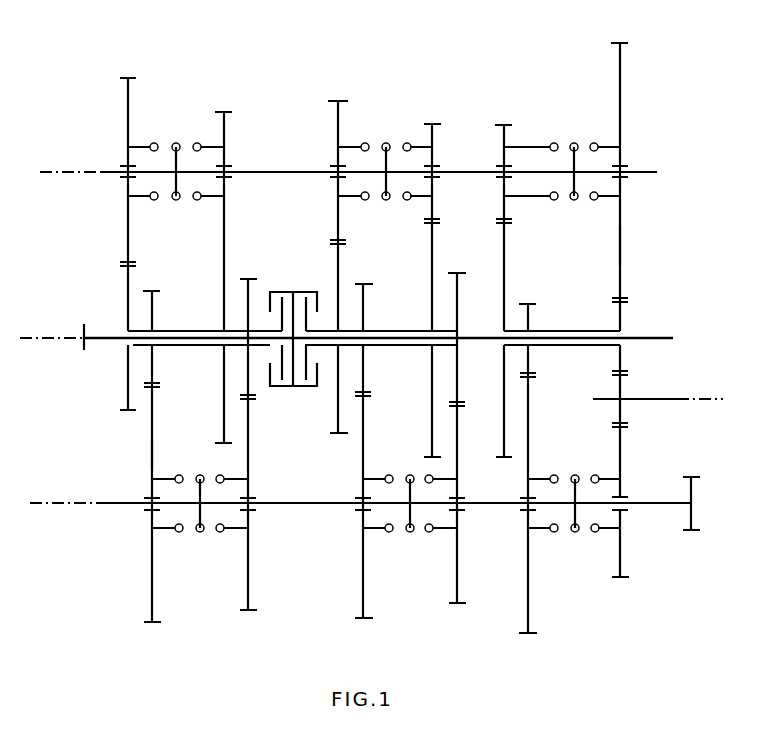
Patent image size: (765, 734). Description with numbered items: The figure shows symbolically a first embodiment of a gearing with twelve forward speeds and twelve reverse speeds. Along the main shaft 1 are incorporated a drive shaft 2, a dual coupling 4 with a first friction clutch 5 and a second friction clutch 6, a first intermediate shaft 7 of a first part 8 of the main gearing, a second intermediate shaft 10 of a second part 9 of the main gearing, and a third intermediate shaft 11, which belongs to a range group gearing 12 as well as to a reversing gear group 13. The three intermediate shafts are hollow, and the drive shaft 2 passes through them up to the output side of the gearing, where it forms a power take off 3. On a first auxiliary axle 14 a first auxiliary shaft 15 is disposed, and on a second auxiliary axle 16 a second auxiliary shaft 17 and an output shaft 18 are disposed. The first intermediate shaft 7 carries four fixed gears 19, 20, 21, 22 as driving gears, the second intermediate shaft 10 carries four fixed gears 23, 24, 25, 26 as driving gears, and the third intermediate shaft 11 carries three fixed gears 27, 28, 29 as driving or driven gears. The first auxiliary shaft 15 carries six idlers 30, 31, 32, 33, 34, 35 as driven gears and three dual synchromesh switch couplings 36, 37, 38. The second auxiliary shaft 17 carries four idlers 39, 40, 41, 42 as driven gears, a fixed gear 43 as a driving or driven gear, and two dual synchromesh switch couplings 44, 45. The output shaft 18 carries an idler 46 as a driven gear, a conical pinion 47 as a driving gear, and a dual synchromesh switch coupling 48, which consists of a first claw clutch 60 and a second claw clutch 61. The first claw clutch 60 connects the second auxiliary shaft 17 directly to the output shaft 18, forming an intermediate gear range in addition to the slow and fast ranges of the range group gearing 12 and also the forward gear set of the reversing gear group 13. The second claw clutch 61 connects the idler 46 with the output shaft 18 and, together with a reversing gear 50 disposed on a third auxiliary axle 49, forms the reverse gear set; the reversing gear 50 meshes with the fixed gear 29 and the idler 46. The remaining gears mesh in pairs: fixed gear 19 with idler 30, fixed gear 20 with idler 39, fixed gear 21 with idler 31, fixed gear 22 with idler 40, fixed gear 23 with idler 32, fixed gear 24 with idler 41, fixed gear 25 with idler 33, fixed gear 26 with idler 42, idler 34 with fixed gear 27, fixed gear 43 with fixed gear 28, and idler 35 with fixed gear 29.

The main shaft 1 is at (60, 330).
The drive shaft 2 is at (106, 337).
The power take off 3 is at (662, 338).
The dual coupling 4 is at (292, 284).
The first friction clutch 5 is at (285, 386).
The second friction clutch 6 is at (312, 386).
The first intermediate shaft 7 is at (185, 331).
The first part of the main gearing 8 is at (118, 249).
The second part of the main gearing 9 is at (138, 453).
The second intermediate shaft 10 is at (394, 331).
The third intermediate shaft 11 is at (570, 331).
The range group gearing 12 is at (641, 243).
The reversing gear group 13 is at (640, 450).
The first auxiliary axle 14 is at (55, 172).
The first auxiliary shaft 15 is at (270, 172).
The second auxiliary axle 16 is at (47, 503).
The second auxiliary shaft 17 is at (498, 503).
The output shaft 18 is at (653, 503).
The fixed gear 19 is at (128, 372).
The fixed gear 20 is at (152, 291).
The fixed gear 21 is at (224, 392).
The fixed gear 22 is at (248, 279).
The fixed gear 23 is at (338, 435).
The fixed gear 24 is at (363, 284).
The fixed gear 25 is at (432, 383).
The fixed gear 26 is at (457, 273).
The fixed gear 27 is at (504, 245).
The fixed gear 28 is at (528, 304).
The fixed gear 29 is at (620, 320).
The idler 30 is at (128, 103).
The idler 31 is at (224, 112).
The idler 32 is at (338, 101).
The idler 33 is at (432, 124).
The idler 34 is at (504, 125).
The idler 35 is at (620, 70).
The dual synchromesh switch coupling 36 is at (176, 136).
The dual synchromesh switch coupling 37 is at (386, 136).
The dual synchromesh switch coupling 38 is at (574, 136).
The idler 39 is at (152, 573).
The idler 40 is at (248, 585).
The idler 41 is at (363, 583).
The idler 42 is at (458, 575).
The fixed gear 43 is at (528, 603).
The dual synchromesh switch coupling 44 is at (200, 458).
The dual synchromesh switch coupling 45 is at (410, 461).
The idler 46 is at (620, 560).
The conical pinion 47 is at (691, 532).
The dual synchromesh switch coupling 48 is at (575, 459).
The third auxiliary axle 49 is at (688, 399).
The reversing gear 50 is at (620, 390).
The first claw clutch 60 is at (556, 534).
The second claw clutch 61 is at (593, 534).